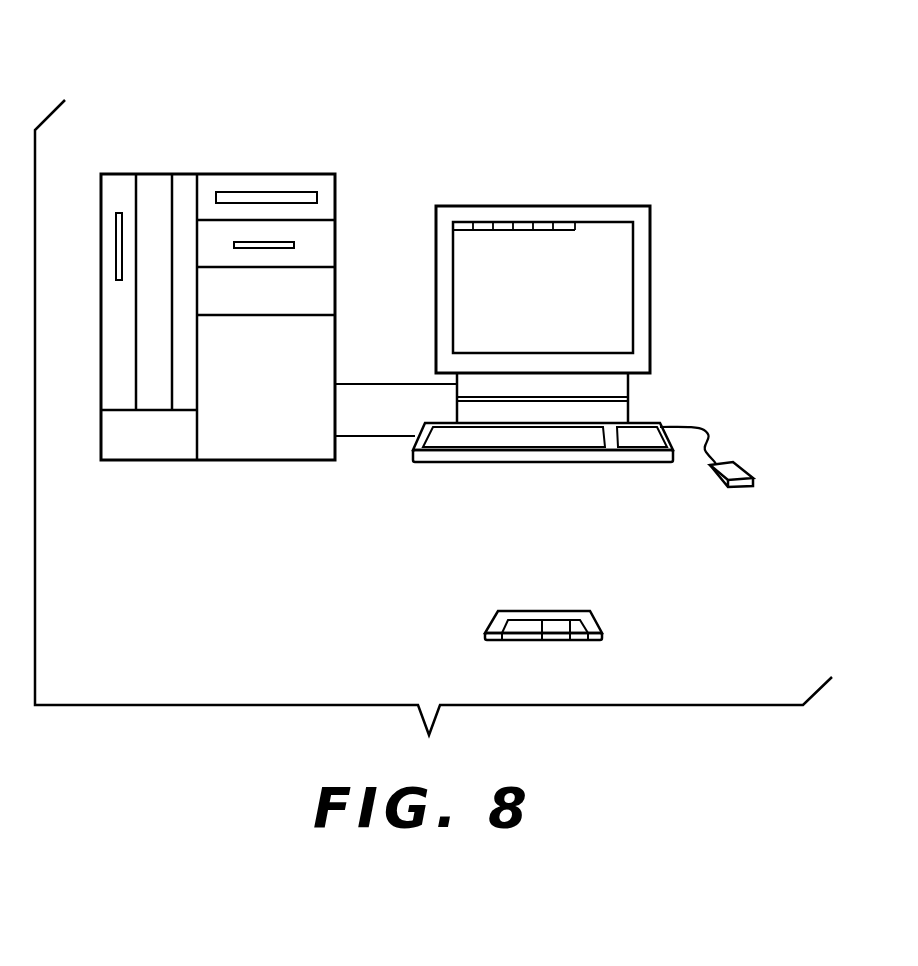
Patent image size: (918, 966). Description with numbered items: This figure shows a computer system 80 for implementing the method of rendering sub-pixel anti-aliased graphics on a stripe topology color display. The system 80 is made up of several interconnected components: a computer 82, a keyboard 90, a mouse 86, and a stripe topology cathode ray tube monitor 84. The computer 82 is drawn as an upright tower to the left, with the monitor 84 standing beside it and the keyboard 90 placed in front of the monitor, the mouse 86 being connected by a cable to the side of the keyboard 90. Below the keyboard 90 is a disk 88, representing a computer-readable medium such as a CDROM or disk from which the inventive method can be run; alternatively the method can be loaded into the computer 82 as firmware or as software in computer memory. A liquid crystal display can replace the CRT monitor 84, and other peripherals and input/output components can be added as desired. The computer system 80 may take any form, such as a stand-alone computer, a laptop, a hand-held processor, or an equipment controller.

The computer system 80 is at (716, 112).
The computer 82 is at (272, 180).
The cathode ray tube monitor 84 is at (608, 217).
The mouse 86 is at (730, 463).
The disk 88 is at (583, 617).
The keyboard 90 is at (502, 457).